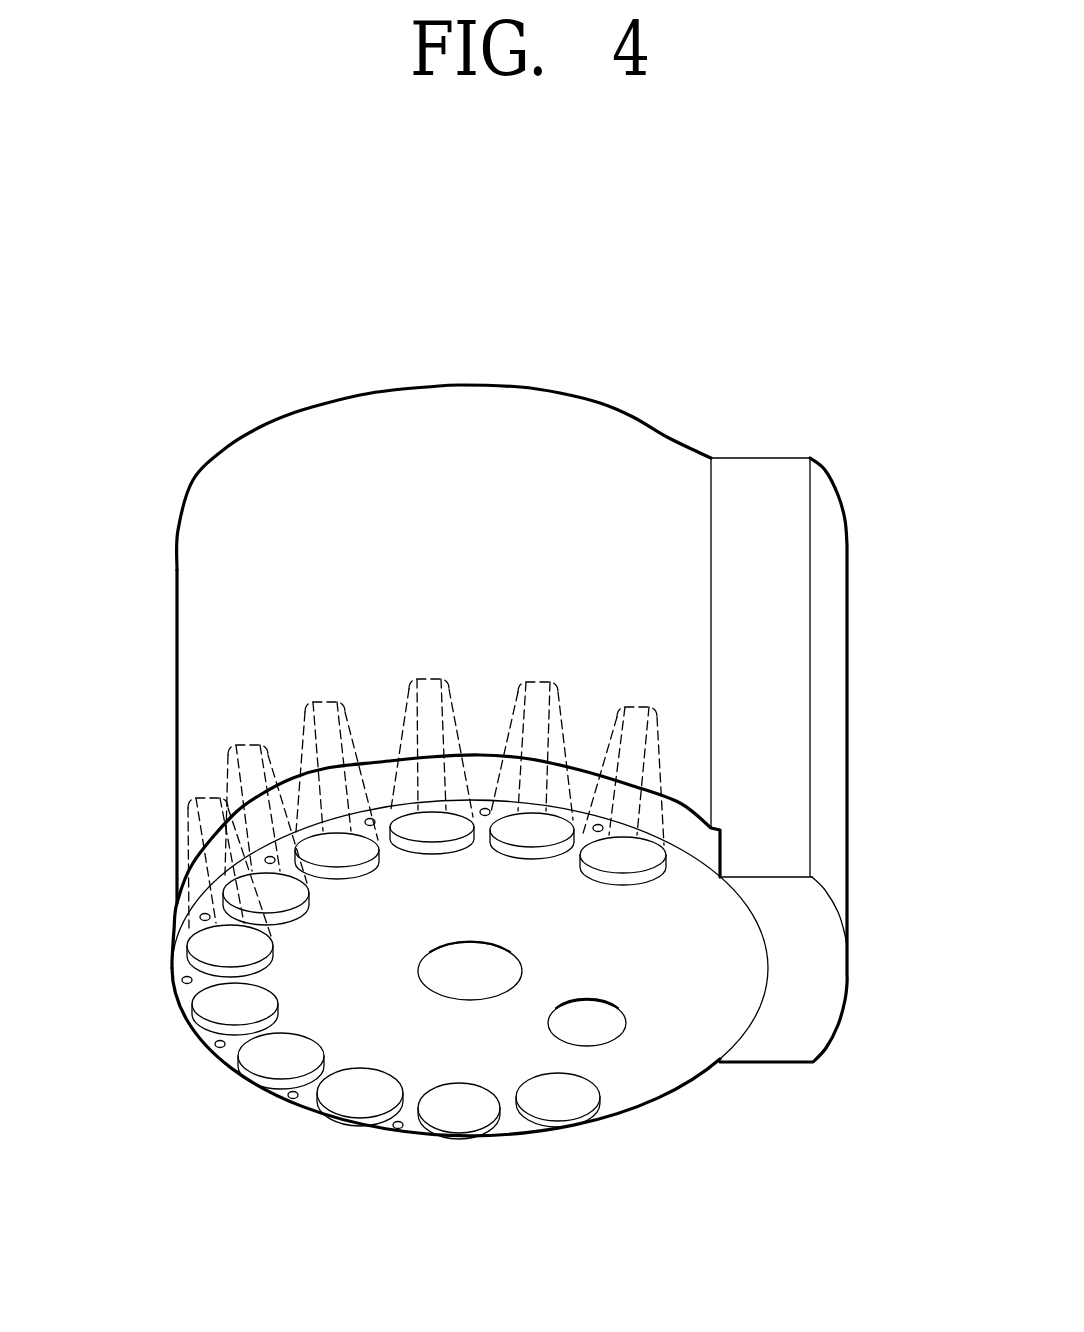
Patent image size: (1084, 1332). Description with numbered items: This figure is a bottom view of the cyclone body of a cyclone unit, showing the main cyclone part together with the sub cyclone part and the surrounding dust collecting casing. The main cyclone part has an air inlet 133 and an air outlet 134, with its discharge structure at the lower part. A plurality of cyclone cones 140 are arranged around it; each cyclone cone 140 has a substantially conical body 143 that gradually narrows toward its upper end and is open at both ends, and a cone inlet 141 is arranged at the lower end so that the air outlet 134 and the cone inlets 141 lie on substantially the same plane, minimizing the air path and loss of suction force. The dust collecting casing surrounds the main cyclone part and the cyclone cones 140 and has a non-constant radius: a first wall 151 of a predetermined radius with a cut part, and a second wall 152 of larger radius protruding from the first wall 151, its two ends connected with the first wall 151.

The air inlet 133 is at (585, 1028).
The air outlet 134 is at (482, 978).
The cyclone cone 140 is at (222, 772).
The cone inlet 141 is at (339, 849).
The body 143 is at (303, 722).
The first wall 151 is at (177, 590).
The second wall 152 is at (830, 655).